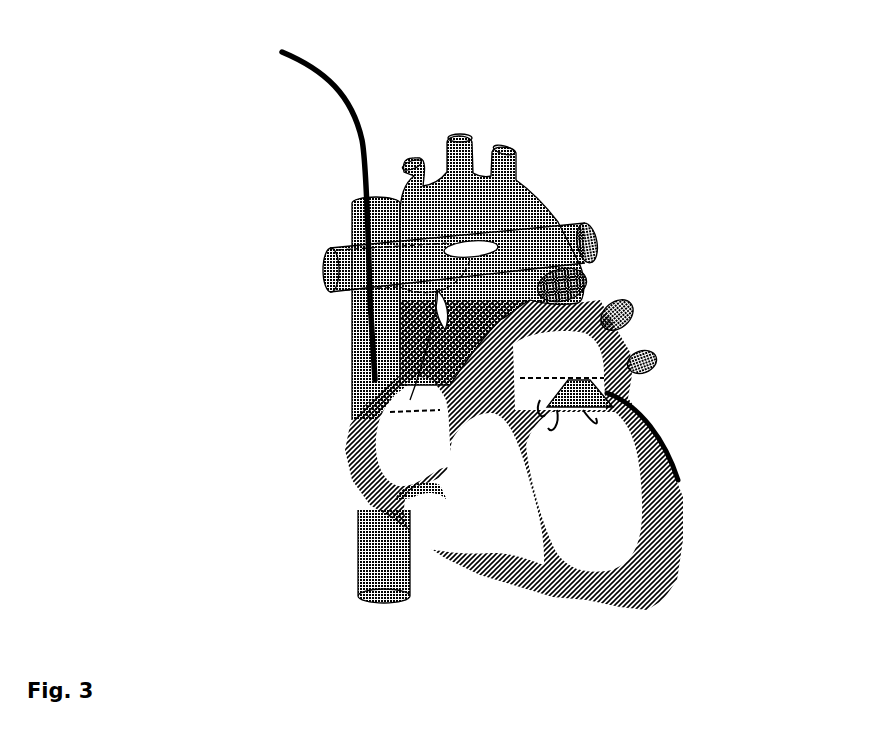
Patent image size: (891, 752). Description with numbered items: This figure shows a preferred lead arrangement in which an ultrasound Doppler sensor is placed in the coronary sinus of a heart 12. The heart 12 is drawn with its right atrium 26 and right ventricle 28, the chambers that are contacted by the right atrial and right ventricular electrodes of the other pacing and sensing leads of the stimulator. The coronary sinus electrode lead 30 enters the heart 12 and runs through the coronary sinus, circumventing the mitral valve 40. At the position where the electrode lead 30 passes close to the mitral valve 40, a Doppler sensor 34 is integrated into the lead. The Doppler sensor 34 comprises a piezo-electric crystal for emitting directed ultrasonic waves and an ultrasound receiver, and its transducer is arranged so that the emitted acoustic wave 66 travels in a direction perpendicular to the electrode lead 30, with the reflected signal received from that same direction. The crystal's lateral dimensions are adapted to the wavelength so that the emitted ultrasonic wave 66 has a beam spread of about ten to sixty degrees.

The heart 12 is at (186, 280).
The right atrium 26 is at (405, 466).
The right ventricle 28 is at (462, 524).
The coronary sinus electrode lead 30 is at (366, 155).
The Doppler sensor 34 is at (577, 373).
The mitral valve 40 is at (585, 425).
The emitted acoustic wave 66 is at (585, 396).